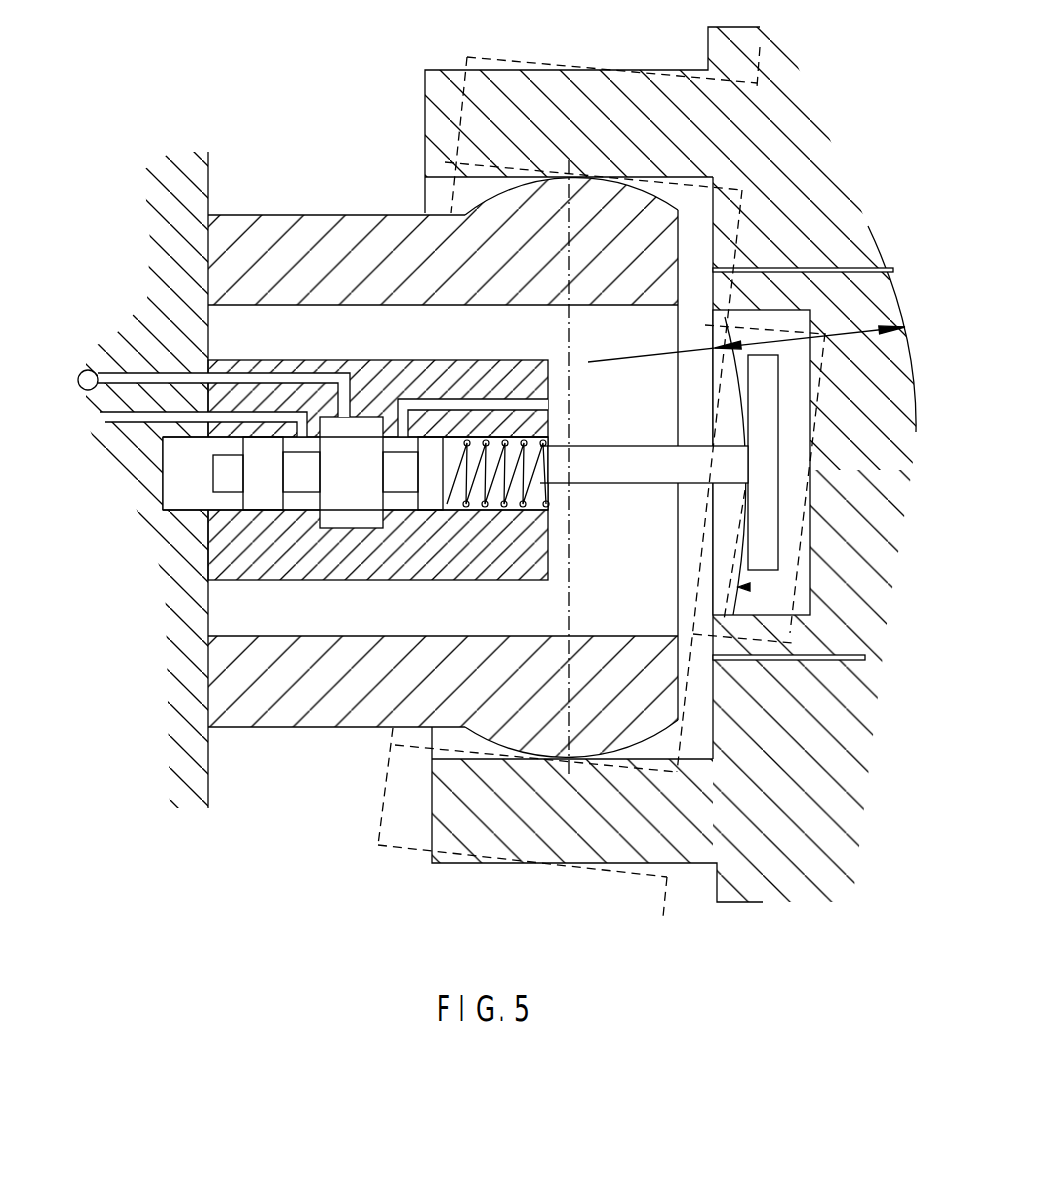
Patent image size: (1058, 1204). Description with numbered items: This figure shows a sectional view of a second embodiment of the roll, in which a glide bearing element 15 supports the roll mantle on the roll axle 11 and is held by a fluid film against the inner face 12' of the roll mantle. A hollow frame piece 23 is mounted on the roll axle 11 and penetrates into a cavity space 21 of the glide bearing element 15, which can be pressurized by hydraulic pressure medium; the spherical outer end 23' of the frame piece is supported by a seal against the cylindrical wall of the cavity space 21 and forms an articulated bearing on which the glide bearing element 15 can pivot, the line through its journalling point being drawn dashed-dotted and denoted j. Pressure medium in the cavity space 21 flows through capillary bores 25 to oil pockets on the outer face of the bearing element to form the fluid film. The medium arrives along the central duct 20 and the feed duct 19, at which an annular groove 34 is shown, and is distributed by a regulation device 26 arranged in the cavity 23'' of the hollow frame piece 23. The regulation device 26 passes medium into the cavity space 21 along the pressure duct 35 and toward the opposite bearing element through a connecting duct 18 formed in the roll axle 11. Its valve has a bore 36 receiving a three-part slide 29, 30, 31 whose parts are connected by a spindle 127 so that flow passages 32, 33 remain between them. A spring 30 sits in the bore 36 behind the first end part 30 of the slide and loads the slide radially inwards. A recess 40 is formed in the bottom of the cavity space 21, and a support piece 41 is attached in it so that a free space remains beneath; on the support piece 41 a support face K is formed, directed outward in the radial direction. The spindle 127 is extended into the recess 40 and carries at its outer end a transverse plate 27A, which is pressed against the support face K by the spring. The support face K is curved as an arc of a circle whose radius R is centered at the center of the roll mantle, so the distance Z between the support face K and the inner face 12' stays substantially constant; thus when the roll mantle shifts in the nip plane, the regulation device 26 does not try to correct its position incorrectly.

The roll axle 11 is at (192, 198).
The inner face of the roll mantle 12' is at (894, 354).
The glide bearing element 15 is at (440, 100).
The connecting duct 18 is at (147, 413).
The feed duct 19 is at (128, 373).
The central duct 20 is at (93, 370).
The cavity space 21 is at (700, 737).
The frame piece 23 is at (443, 456).
The spherical outer end of the frame piece 23' is at (571, 381).
The cavity in the hollow frame piece 23'' is at (443, 395).
The capillary bore 25 is at (853, 262).
The regulation device 26 is at (145, 552).
The plate 27A is at (763, 537).
The slide part 29 is at (343, 493).
The first end part of the slide 30 is at (473, 500).
The slide part 31 is at (262, 503).
The flow passage 32 is at (437, 493).
The flow passage 33 is at (303, 503).
The annular groove 34 is at (413, 503).
The pressure duct 35 is at (412, 405).
The bore 36 is at (487, 440).
The recess 40 is at (793, 473).
The support piece 41 is at (720, 563).
The spindle 127 is at (636, 457).
The line through the journalling point j is at (540, 190).
The radius of the support face R is at (662, 355).
The distance of the support face from the inner face Z is at (810, 327).
The support face K is at (738, 587).